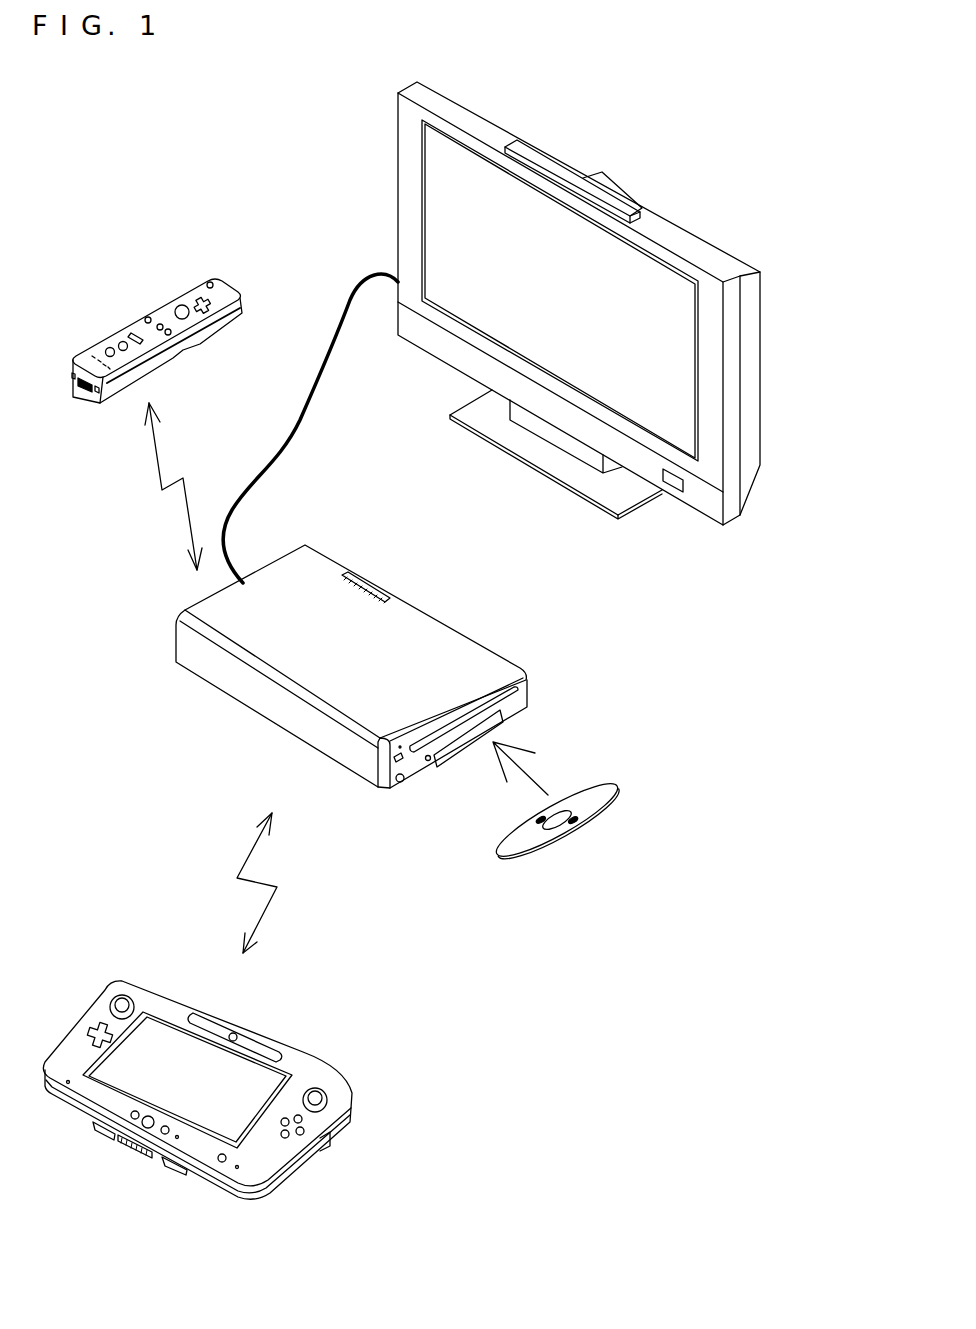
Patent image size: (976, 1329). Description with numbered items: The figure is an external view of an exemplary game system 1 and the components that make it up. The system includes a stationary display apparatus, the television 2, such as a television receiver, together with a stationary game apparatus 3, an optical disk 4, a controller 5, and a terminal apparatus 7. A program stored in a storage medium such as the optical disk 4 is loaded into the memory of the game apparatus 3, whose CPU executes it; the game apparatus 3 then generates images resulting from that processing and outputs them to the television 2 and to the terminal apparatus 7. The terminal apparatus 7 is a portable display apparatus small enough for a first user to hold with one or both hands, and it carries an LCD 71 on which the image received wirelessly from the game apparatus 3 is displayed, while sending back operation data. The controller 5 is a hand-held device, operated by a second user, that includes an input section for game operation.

The game system 1 is at (243, 128).
The television 2 is at (717, 252).
The game apparatus 3 is at (408, 632).
The optical disk 4 is at (612, 782).
The controller 5 is at (132, 319).
The terminal apparatus 7 is at (342, 1060).
The LCD 71 is at (213, 1122).